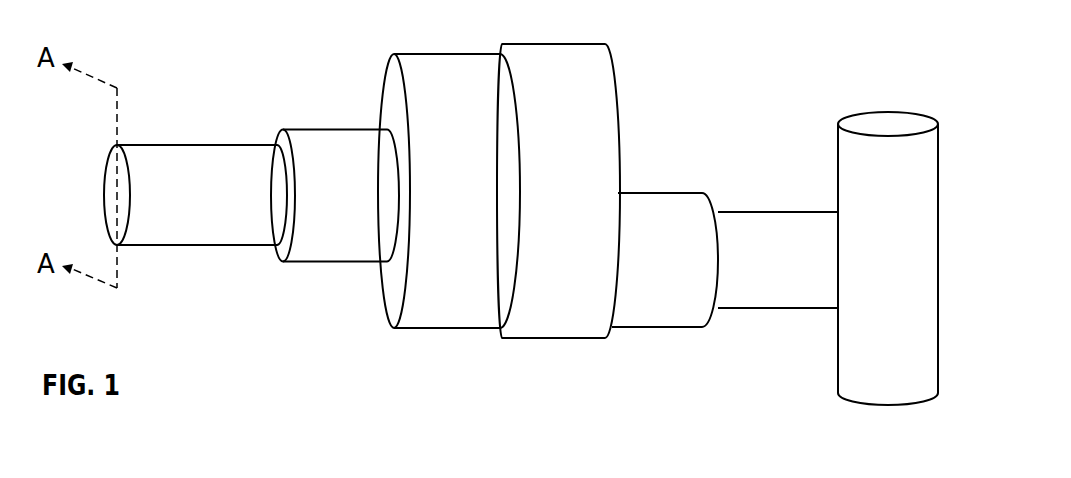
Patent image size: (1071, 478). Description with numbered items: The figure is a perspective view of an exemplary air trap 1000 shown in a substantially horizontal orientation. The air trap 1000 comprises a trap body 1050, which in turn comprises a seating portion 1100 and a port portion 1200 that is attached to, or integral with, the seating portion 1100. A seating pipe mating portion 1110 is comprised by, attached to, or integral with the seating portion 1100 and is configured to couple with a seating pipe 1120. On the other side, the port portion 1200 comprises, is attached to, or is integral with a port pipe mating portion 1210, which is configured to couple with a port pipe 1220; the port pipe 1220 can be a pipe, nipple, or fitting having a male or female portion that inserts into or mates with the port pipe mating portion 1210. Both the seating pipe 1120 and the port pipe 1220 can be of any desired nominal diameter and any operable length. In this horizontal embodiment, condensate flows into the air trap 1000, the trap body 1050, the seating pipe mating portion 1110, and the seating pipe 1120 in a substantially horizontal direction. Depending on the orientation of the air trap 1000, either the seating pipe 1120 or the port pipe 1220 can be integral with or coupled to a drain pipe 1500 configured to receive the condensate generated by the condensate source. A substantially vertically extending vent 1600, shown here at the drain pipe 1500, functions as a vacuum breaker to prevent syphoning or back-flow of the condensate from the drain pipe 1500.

The air trap 1000 is at (218, 48).
The trap body 1050 is at (466, 28).
The seating portion 1100 is at (448, 250).
The seating pipe mating portion 1110 is at (322, 202).
The seating pipe 1120 is at (183, 193).
The port portion 1200 is at (558, 260).
The port pipe mating portion 1210 is at (655, 272).
The port pipe 1220 is at (748, 270).
The drain pipe 1500 is at (862, 365).
The vent 1600 is at (903, 167).